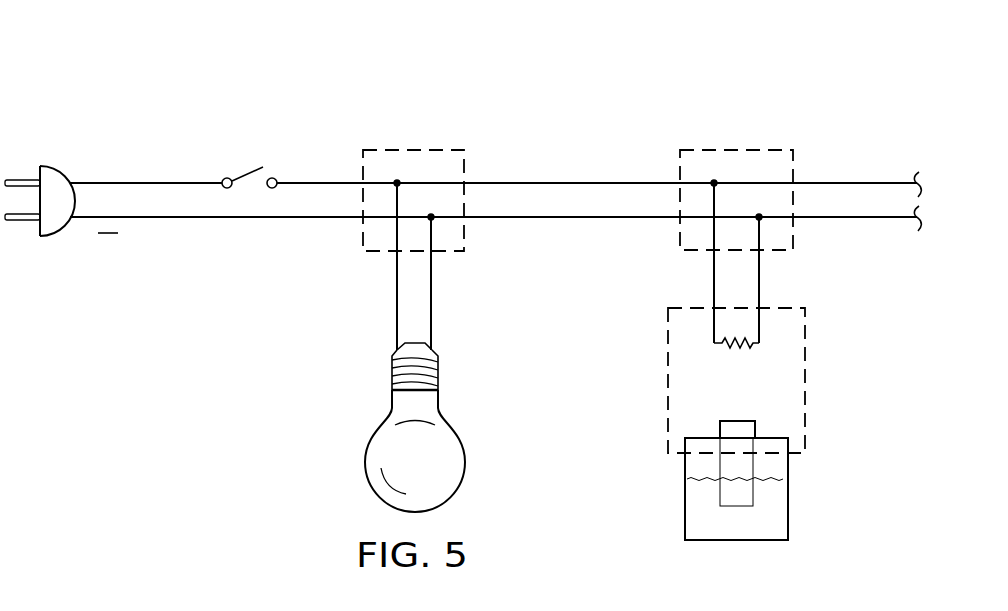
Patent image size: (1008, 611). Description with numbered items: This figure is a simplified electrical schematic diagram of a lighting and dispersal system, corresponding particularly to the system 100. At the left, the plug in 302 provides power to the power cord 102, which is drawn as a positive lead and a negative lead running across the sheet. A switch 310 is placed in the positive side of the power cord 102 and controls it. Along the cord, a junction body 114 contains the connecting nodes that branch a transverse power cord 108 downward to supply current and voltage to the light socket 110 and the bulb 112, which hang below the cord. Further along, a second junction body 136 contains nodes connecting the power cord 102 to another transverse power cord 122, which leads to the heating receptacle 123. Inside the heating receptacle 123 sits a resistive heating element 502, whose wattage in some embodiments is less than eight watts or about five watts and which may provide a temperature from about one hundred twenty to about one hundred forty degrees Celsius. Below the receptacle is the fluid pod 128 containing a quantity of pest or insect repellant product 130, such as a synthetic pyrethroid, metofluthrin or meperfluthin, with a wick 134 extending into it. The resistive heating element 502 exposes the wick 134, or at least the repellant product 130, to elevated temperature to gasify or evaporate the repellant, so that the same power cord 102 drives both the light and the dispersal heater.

The system 100 is at (670, 72).
The power cord 102 is at (578, 182).
The transverse power cord 108 is at (396, 270).
The light socket 110 is at (392, 368).
The bulb 112 is at (365, 458).
The junction body 114 is at (400, 148).
The transverse power cord 122 is at (762, 268).
The heating receptacle 123 is at (807, 392).
The fluid pod 128 is at (684, 500).
The repellant product 130 is at (780, 503).
The wick 134 is at (738, 507).
The junction body 136 is at (737, 148).
The plug in 302 is at (48, 166).
The switch 310 is at (248, 168).
The resistive heating element 502 is at (735, 350).